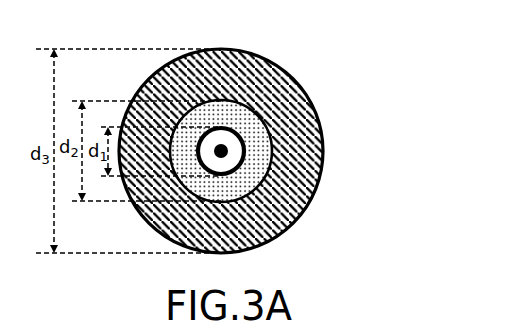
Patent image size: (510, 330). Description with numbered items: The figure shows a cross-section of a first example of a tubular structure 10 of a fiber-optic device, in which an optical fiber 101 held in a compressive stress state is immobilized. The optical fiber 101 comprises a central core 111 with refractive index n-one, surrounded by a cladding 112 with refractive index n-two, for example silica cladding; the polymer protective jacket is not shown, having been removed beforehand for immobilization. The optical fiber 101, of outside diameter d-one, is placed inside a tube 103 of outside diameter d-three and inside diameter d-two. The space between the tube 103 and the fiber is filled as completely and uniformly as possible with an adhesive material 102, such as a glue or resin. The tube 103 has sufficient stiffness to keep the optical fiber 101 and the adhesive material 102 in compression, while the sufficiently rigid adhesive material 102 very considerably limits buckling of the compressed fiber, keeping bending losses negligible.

The tubular structure 10 is at (110, 30).
The optical fiber 101 is at (402, 109).
The adhesive material 102 is at (226, 117).
The tube 103 is at (283, 227).
The core 111 is at (228, 151).
The cladding 112 is at (246, 174).